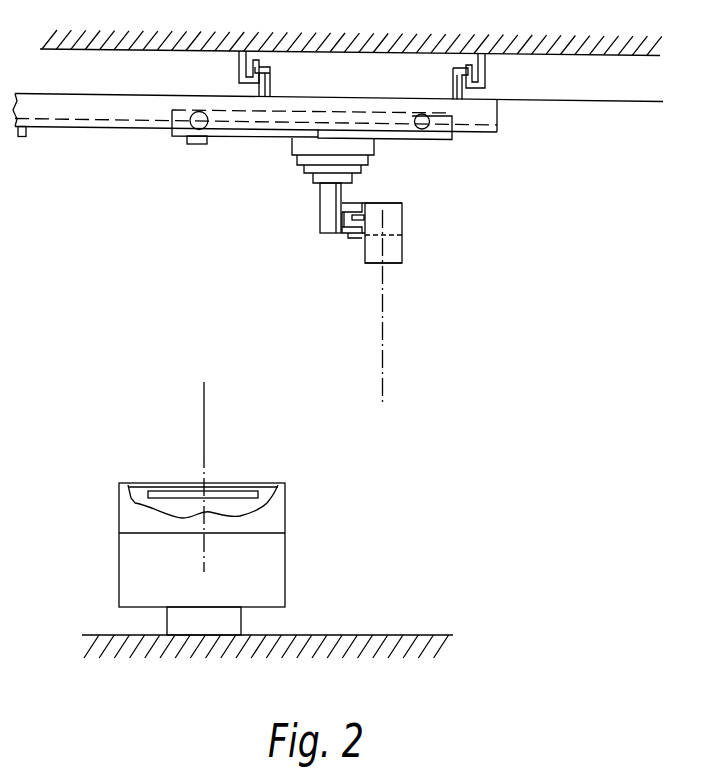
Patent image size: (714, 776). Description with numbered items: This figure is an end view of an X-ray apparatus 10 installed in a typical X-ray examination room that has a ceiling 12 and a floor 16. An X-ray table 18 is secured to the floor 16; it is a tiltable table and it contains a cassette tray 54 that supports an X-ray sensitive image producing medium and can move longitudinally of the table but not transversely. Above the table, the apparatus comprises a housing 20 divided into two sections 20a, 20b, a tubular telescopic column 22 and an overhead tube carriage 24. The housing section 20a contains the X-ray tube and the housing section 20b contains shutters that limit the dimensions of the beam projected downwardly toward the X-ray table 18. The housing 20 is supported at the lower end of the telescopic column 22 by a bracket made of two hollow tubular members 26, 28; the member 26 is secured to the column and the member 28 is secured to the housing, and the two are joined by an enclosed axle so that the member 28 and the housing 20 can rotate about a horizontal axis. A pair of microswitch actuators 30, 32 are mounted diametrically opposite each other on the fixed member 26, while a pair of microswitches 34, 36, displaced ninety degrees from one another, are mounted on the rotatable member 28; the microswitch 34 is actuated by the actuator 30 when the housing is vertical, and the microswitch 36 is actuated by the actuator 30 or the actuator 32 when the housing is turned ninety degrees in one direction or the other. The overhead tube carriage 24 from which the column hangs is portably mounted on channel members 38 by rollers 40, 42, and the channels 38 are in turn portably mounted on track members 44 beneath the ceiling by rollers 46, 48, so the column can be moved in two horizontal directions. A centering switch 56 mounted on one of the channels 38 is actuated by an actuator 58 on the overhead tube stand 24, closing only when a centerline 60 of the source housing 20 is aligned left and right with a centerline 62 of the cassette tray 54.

The X-ray apparatus 10 is at (302, 176).
The ceiling 12 is at (568, 56).
The floor 16 is at (340, 635).
The X-ray table 18 is at (287, 513).
The housing 20 is at (411, 247).
The housing section 20a is at (402, 231).
The housing section 20b is at (402, 263).
The tubular telescopic column 22 is at (376, 157).
The overhead tube carriage 24 is at (452, 149).
The hollow tubular member 26 is at (342, 216).
The hollow tubular member 28 is at (358, 233).
The microswitch actuator 30 is at (345, 204).
The microswitch actuator 32 is at (352, 234).
The microswitch 34 is at (360, 206).
The microswitch 36 is at (402, 216).
The channel member 38 is at (502, 114).
The roller 40 is at (200, 108).
The roller 42 is at (416, 126).
The track member 44 is at (240, 66).
The roller 46 is at (262, 66).
The roller 48 is at (455, 68).
The cassette tray 54 is at (235, 496).
The centering switch 56 is at (25, 138).
The actuator 58 is at (198, 145).
The centerline 60 is at (384, 362).
The centerline 62 is at (206, 430).